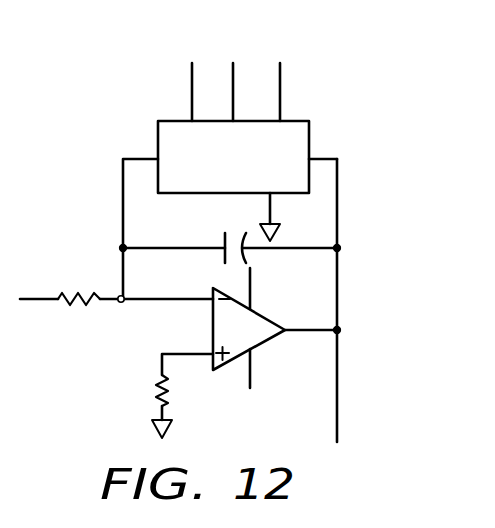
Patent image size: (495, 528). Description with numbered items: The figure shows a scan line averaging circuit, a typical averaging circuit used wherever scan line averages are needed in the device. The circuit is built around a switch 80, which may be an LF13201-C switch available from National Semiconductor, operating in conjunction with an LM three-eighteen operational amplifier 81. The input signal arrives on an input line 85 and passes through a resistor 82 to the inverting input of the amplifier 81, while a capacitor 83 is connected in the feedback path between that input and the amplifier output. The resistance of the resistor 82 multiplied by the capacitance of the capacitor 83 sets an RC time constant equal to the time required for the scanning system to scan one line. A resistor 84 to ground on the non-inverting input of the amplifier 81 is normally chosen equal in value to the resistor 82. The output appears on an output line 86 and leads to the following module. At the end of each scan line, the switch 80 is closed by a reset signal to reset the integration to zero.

The switch 80 is at (176, 120).
The operational amplifier 81 is at (213, 317).
The resistor 82 is at (85, 304).
The capacitor 83 is at (225, 241).
The resistor to ground 84 is at (158, 382).
The input line 85 is at (43, 298).
The output line 86 is at (337, 387).